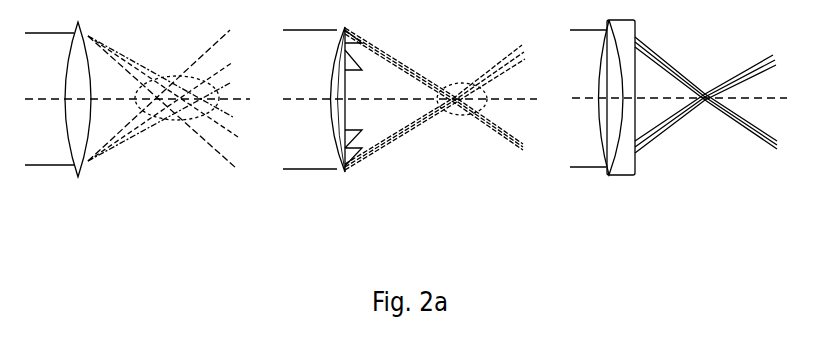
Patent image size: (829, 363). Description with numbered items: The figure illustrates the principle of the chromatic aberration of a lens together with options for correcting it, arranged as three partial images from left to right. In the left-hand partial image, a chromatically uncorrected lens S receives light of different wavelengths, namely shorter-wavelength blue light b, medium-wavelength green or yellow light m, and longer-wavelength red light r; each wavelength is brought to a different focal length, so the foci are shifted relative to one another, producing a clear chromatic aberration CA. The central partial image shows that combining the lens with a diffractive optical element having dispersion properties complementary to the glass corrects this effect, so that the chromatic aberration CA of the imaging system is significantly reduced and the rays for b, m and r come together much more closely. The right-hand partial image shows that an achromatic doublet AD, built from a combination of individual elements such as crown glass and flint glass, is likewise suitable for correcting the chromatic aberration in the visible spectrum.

The chromatically uncorrected lens S is at (78, 121).
The achromatic doublet AD is at (617, 118).
The chromatic aberration CA is at (426, 117).
The blue light b is at (434, 95).
The medium-wavelength light m is at (445, 99).
The red light r is at (432, 102).